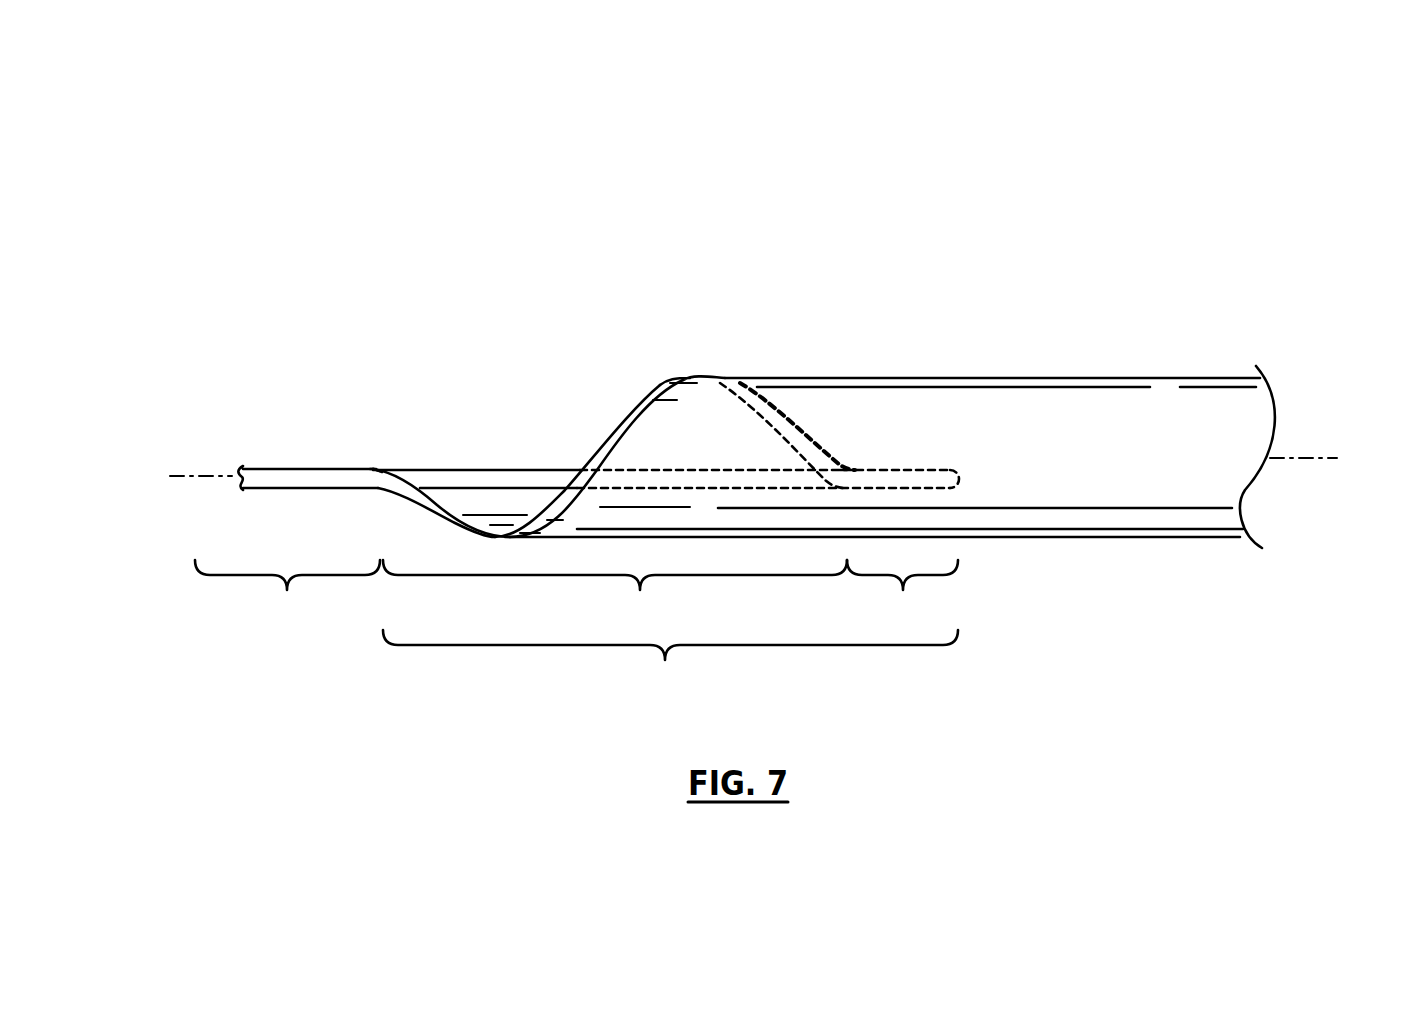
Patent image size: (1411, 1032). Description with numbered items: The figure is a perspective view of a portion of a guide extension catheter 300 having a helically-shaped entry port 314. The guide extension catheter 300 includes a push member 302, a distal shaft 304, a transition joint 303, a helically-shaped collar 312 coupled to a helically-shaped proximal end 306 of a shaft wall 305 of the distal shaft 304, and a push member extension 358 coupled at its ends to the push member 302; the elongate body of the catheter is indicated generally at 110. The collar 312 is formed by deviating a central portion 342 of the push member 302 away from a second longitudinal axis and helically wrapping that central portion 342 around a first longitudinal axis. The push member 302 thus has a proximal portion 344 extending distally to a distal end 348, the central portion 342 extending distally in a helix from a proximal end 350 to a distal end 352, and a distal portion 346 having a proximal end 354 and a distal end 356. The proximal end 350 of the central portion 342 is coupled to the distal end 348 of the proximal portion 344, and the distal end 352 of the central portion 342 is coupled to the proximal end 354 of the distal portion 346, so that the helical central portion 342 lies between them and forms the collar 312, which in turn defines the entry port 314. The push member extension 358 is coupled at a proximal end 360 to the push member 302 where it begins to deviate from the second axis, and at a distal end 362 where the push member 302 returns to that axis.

The guide extension catheter 300 is at (468, 256).
The elongate body 110 is at (1280, 440).
The push member 302 is at (270, 468).
The transition joint 303 is at (670, 628).
The distal shaft 304 is at (1071, 376).
The shaft wall 305 is at (950, 380).
The helically-shaped proximal end 306 is at (692, 380).
The helically-shaped collar 312 is at (646, 412).
The helically-shaped entry port 314 is at (503, 379).
The central portion 342 is at (615, 592).
The proximal portion 344 is at (287, 592).
The distal portion 346 is at (902, 592).
The distal end 348 is at (373, 468).
The proximal end 350 is at (377, 468).
The distal end 352 is at (840, 463).
The proximal end 354 is at (843, 462).
The distal end 356 is at (953, 478).
The push member extension 358 is at (533, 480).
The proximal end 360 is at (374, 468).
The distal end 362 is at (840, 462).